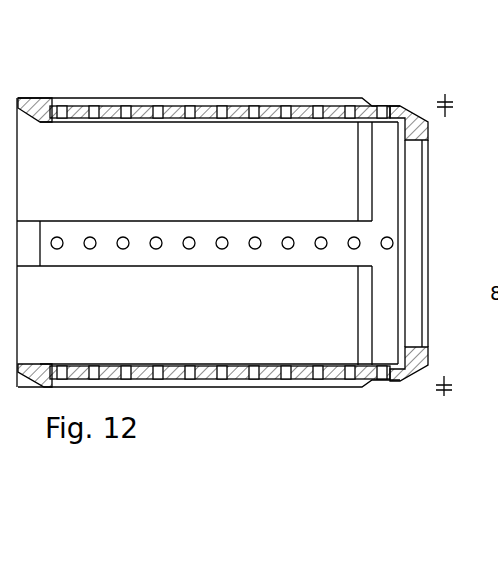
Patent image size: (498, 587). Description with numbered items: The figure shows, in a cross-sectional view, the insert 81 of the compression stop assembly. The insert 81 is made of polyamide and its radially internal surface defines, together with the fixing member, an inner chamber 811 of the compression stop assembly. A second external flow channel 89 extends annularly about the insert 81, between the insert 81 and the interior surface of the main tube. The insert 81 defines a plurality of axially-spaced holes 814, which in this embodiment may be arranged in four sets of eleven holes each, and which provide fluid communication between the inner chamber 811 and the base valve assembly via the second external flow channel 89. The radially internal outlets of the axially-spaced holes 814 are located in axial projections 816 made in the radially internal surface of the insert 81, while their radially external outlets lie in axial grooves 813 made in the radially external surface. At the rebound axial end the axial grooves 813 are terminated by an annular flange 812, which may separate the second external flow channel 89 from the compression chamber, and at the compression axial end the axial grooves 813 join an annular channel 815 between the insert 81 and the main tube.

The insert 81 is at (219, 211).
The inner chamber 811 is at (216, 165).
The annular flange 812 is at (33, 98).
The axial grooves 813 is at (157, 98).
The axially-spaced holes 814 is at (125, 108).
The annular channel 815 is at (383, 106).
The axial projections 816 is at (265, 236).
The second external flow channel 89 is at (459, 247).